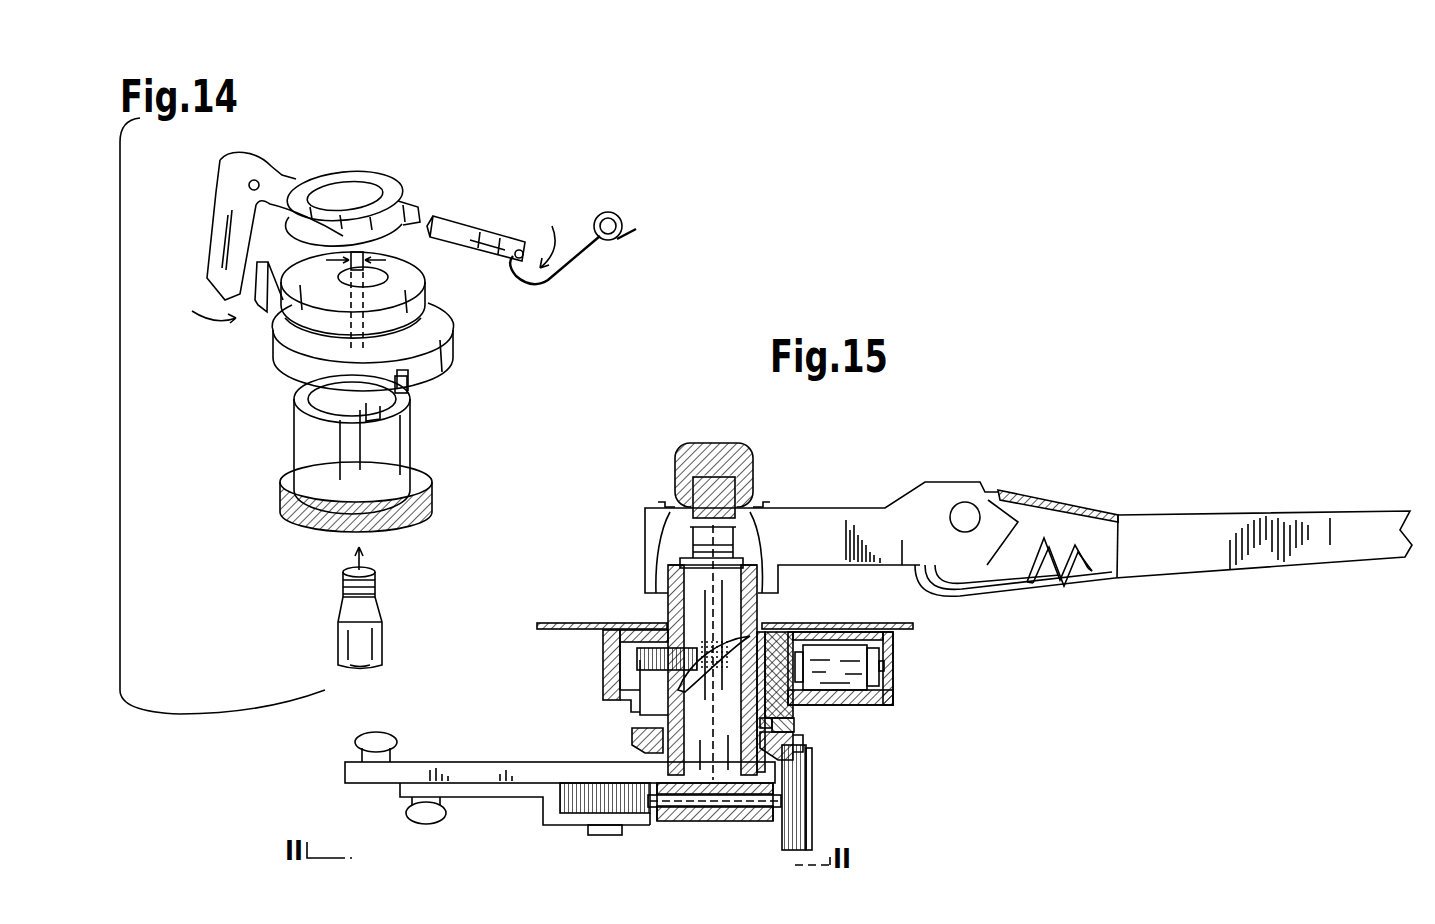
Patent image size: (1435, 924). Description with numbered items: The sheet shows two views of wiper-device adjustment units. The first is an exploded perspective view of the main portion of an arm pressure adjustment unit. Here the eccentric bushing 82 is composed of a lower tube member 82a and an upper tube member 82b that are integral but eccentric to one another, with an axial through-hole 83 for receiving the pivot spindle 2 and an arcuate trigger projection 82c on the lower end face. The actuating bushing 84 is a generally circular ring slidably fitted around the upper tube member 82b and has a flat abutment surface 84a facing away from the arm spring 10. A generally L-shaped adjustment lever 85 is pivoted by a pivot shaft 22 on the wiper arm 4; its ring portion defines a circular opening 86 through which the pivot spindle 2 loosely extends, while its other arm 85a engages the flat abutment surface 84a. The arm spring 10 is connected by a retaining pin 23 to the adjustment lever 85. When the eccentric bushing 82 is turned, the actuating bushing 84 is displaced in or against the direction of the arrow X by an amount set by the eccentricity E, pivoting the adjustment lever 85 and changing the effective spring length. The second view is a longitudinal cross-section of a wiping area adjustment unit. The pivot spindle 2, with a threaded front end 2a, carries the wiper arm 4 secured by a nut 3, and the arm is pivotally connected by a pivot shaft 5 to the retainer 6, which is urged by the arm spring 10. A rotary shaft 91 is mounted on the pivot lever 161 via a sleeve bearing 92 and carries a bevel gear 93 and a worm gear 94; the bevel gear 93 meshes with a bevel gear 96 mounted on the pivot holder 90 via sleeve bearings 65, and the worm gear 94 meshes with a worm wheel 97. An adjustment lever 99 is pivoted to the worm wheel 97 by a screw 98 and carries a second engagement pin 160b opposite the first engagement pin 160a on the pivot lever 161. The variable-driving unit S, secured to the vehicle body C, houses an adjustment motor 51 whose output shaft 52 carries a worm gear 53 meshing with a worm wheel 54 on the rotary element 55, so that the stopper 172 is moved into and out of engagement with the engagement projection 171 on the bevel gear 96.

In FIG. 14, the pivot spindle 2 is at (372, 642).
In FIG. 15, the pivot spindle 2 is at (700, 605).
In FIG. 14, the externally threaded front end 2a is at (373, 577).
In FIG. 15, the nut 3 is at (712, 442).
In FIG. 15, the wiper arm 4 is at (821, 501).
In FIG. 15, the pivot shaft 5 is at (967, 507).
In FIG. 15, the retainer 6 is at (1226, 513).
In FIG. 14, the arm spring 10 is at (596, 217).
In FIG. 15, the arm spring 10 is at (1040, 582).
In FIG. 14, the pivot shaft 22 is at (262, 180).
In FIG. 14, the retaining pin 23 is at (519, 249).
In FIG. 15, the adjustment motor 51 is at (857, 675).
In FIG. 15, the output shaft 52 is at (815, 625).
In FIG. 15, the worm gear 53 is at (710, 648).
In FIG. 14, the worm wheel 54 is at (427, 495).
In FIG. 15, the worm wheel 54 is at (640, 657).
In FIG. 14, the rotary element 55 is at (388, 448).
In FIG. 15, the rotary element 55 is at (650, 687).
In FIG. 15, the sleeve bearings 65 is at (632, 736).
In FIG. 14, the eccentric bushing 82 is at (418, 325).
In FIG. 14, the lower tube member 82a is at (448, 346).
In FIG. 14, the upper tube member 82b is at (400, 278).
In FIG. 14, the arcuate trigger projection 82c is at (472, 378).
In FIG. 14, the axial through-hole 83 is at (348, 284).
In FIG. 14, the actuating bushing 84 is at (280, 302).
In FIG. 14, the flat abutment surface 84a is at (262, 292).
In FIG. 14, the adjustment lever 85 is at (452, 230).
In FIG. 14, the arm 85a is at (243, 228).
In FIG. 14, the circular opening 86 is at (358, 200).
In FIG. 15, the pivot holder 90 is at (677, 622).
In FIG. 15, the rotary shaft 91 is at (730, 808).
In FIG. 15, the sleeve bearing 92 is at (685, 822).
In FIG. 15, the bevel gear 93 is at (806, 812).
In FIG. 15, the worm gear 94 is at (635, 840).
In FIG. 15, the bevel gear 96 is at (794, 733).
In FIG. 15, the worm wheel 97 is at (572, 812).
In FIG. 15, the screw 98 is at (605, 835).
In FIG. 15, the adjustment lever 99 is at (550, 815).
In FIG. 15, the first engagement pin 160a is at (377, 732).
In FIG. 15, the second engagement pin 160b is at (428, 827).
In FIG. 15, the pivot lever 161 is at (483, 760).
In FIG. 15, the engagement projection 171 is at (797, 727).
In FIG. 15, the stopper 172 is at (793, 717).
In FIG. 15, the vehicle body C is at (892, 625).
In FIG. 15, the variable-driving unit S is at (893, 656).
In FIG. 14, the eccentricity E is at (357, 248).
In FIG. 14, the arrow X is at (588, 283).